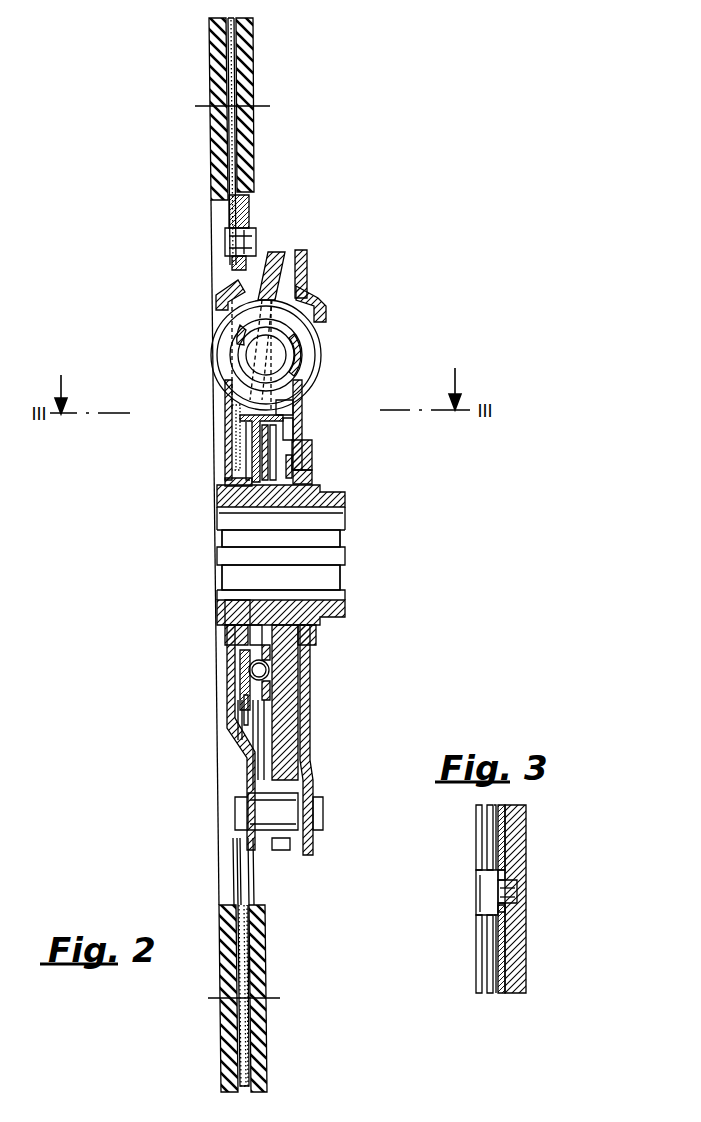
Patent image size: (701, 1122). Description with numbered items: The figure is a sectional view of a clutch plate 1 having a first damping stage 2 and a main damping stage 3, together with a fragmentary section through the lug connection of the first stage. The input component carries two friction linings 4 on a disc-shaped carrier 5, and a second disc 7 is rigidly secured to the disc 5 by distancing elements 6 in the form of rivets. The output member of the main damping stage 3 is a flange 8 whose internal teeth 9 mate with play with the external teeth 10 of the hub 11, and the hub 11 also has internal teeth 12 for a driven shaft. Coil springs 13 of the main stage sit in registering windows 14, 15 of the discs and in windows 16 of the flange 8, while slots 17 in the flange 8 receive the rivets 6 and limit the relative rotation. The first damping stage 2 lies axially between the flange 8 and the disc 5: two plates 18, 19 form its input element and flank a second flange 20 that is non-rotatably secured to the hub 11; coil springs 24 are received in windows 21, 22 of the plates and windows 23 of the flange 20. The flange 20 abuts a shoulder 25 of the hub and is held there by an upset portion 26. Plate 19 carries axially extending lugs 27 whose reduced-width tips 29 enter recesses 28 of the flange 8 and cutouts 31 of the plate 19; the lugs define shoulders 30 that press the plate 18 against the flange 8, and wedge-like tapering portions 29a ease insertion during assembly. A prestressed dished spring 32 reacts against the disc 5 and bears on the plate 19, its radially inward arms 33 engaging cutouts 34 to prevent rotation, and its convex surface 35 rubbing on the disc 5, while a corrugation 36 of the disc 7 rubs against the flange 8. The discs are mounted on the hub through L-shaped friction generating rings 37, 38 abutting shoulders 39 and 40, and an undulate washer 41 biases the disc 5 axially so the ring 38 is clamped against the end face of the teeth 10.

In FIG. 2, the clutch plate 1 is at (326, 152).
In FIG. 2, the first damping stage 2 is at (217, 662).
In FIG. 2, the main damping stage 3 is at (210, 330).
In FIG. 2, the friction linings 4 is at (209, 38).
In FIG. 2, the carrier disc 5 is at (250, 212).
In FIG. 2, the distancing elements 6 is at (262, 808).
In FIG. 2, the second disc 7 is at (305, 262).
In FIG. 2, the flange 8 is at (282, 748).
In FIG. 3, the flange 8 is at (520, 978).
In FIG. 2, the internal teeth 9 is at (299, 605).
In FIG. 2, the external teeth 10 is at (273, 605).
In FIG. 2, the hub 11 is at (225, 578).
In FIG. 2, the internal teeth 12 is at (228, 524).
In FIG. 2, the coil springs 13 is at (310, 345).
In FIG. 2, the window 14 is at (226, 390).
In FIG. 2, the window 15 is at (300, 400).
In FIG. 2, the windows 16 is at (276, 285).
In FIG. 2, the slots 17 is at (281, 851).
In FIG. 2, the plate 18 is at (308, 710).
In FIG. 3, the plate 18 is at (502, 993).
In FIG. 2, the plate 19 is at (245, 725).
In FIG. 3, the plate 19 is at (478, 833).
In FIG. 2, the second flange 20 is at (253, 742).
In FIG. 3, the second flange 20 is at (490, 993).
In FIG. 2, the windows 21 is at (270, 665).
In FIG. 2, the windows 22 is at (245, 690).
In FIG. 2, the windows 23 is at (243, 705).
In FIG. 2, the coil springs 24 is at (270, 675).
In FIG. 2, the shoulder 25 is at (300, 478).
In FIG. 2, the upset portion 26 is at (228, 481).
In FIG. 2, the lugs 27 is at (270, 410).
In FIG. 3, the lugs 27 is at (480, 905).
In FIG. 2, the recesses 28 is at (290, 427).
In FIG. 3, the recesses 28 is at (516, 885).
In FIG. 3, the tips 29 is at (518, 892).
In FIG. 3, the wedge-like tapering portions 29a is at (518, 900).
In FIG. 3, the shoulders 30 is at (505, 878).
In FIG. 2, the cutouts 31 is at (304, 447).
In FIG. 3, the cutouts 31 is at (492, 895).
In FIG. 2, the dished spring 32 is at (246, 437).
In FIG. 2, the arms 33 is at (252, 467).
In FIG. 2, the cutouts 34 is at (246, 450).
In FIG. 2, the convex surface 35 is at (232, 413).
In FIG. 2, the corrugation 36 is at (300, 466).
In FIG. 2, the friction generating ring 37 is at (232, 634).
In FIG. 2, the friction generating ring 38 is at (316, 636).
In FIG. 2, the shoulder 39 is at (230, 616).
In FIG. 2, the shoulder 40 is at (342, 521).
In FIG. 2, the undulate washer 41 is at (250, 641).